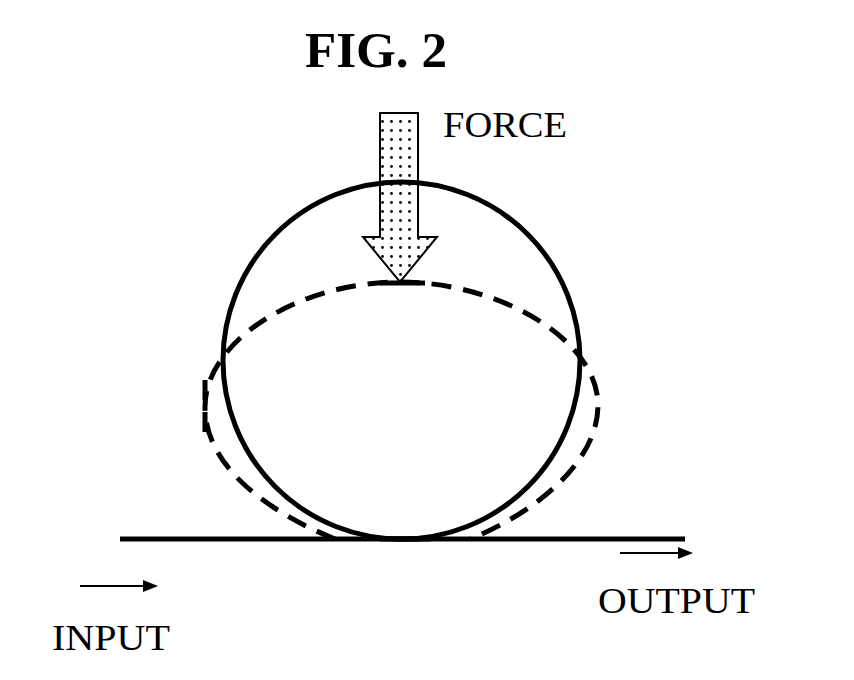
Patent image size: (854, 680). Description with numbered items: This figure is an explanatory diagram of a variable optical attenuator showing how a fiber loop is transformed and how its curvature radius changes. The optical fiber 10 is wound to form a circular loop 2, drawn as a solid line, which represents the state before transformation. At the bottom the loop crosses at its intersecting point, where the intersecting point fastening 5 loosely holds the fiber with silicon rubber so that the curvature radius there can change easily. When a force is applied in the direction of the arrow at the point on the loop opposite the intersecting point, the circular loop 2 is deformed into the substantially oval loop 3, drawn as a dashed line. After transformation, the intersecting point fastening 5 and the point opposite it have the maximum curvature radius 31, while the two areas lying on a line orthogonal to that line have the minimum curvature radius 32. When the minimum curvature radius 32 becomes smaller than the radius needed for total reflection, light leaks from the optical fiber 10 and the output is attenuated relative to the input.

The circular loop 2 is at (287, 218).
The substantially oval loop 3 is at (513, 297).
The maximum curvature radius 31 is at (405, 283).
The minimum curvature radius 32 is at (206, 418).
The optical fiber 10 is at (170, 538).
The intersecting point fastening 5 is at (408, 540).